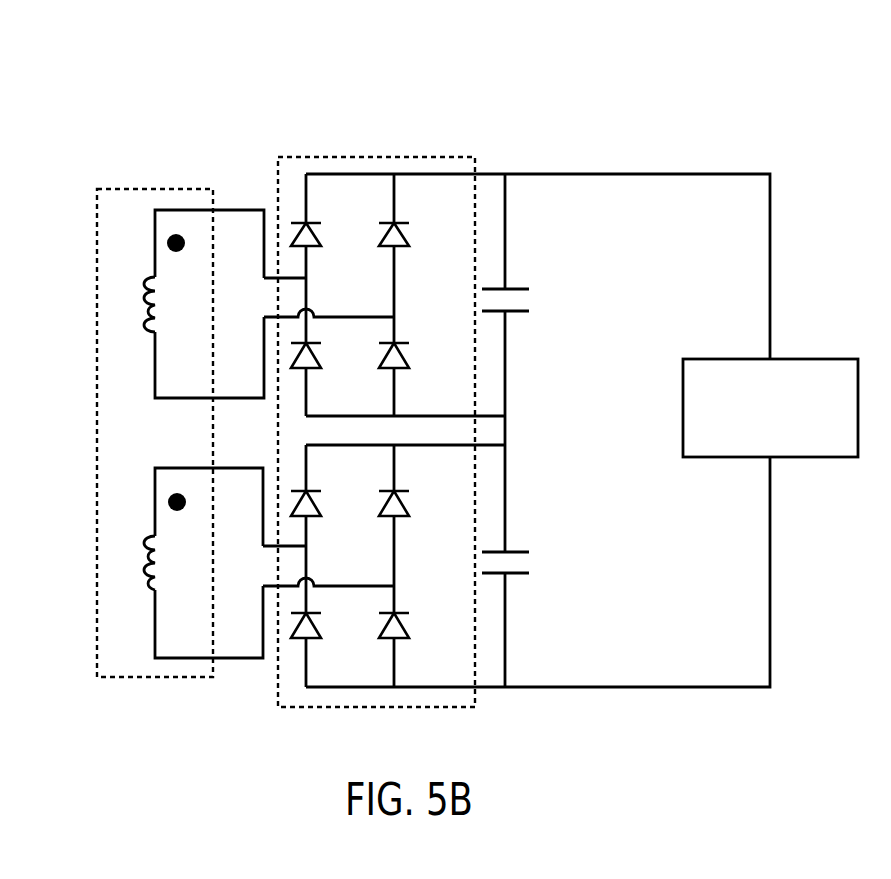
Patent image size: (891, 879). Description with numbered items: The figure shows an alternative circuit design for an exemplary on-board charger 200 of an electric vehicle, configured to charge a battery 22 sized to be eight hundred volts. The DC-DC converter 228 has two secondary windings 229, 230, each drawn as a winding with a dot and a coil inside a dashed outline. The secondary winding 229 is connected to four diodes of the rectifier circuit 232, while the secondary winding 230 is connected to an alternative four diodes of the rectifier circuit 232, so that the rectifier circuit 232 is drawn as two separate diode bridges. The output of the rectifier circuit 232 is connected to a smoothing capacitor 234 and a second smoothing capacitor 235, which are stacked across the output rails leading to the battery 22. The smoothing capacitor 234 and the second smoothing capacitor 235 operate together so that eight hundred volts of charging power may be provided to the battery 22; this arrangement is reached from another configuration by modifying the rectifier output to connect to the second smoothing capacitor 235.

The on-board charger 200 is at (705, 98).
The battery 22 is at (788, 358).
The DC-DC converter 228 is at (158, 188).
The secondary winding 229 is at (140, 246).
The secondary winding 230 is at (140, 620).
The rectifier circuit 232 is at (356, 157).
The smoothing capacitor 234 is at (535, 265).
The second smoothing capacitor 235 is at (535, 527).